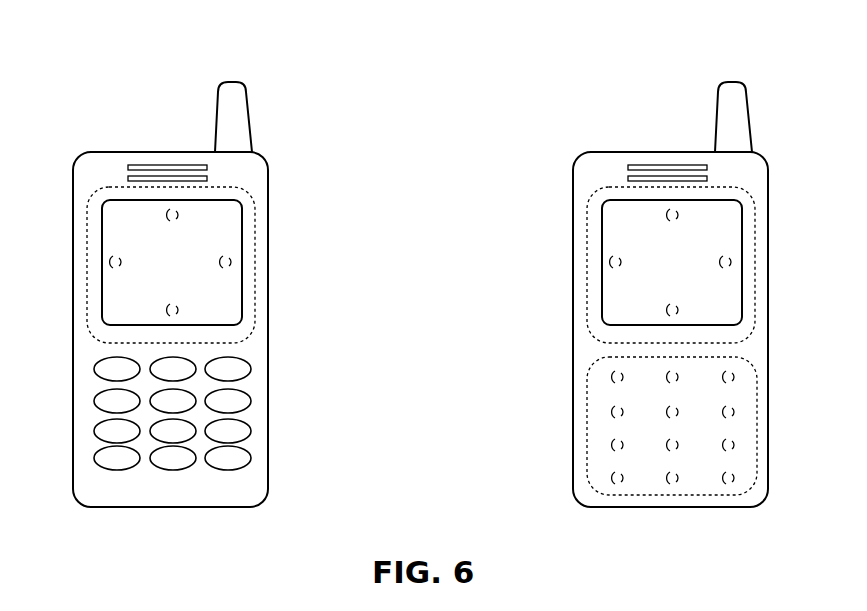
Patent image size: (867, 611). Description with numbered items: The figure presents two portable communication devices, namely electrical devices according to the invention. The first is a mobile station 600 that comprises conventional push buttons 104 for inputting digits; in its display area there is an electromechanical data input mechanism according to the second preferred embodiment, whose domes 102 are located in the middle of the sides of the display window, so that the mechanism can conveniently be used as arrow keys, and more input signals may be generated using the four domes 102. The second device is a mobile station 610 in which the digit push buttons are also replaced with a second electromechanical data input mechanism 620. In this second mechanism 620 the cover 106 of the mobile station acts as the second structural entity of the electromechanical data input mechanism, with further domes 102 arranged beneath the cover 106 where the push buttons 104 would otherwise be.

The mobile station 600 is at (107, 73).
The mobile station 610 is at (607, 73).
The domes 102 is at (234, 262).
The cover 106 is at (260, 346).
The push buttons 104 is at (250, 456).
The second electromechanical data input mechanism 620 is at (589, 429).